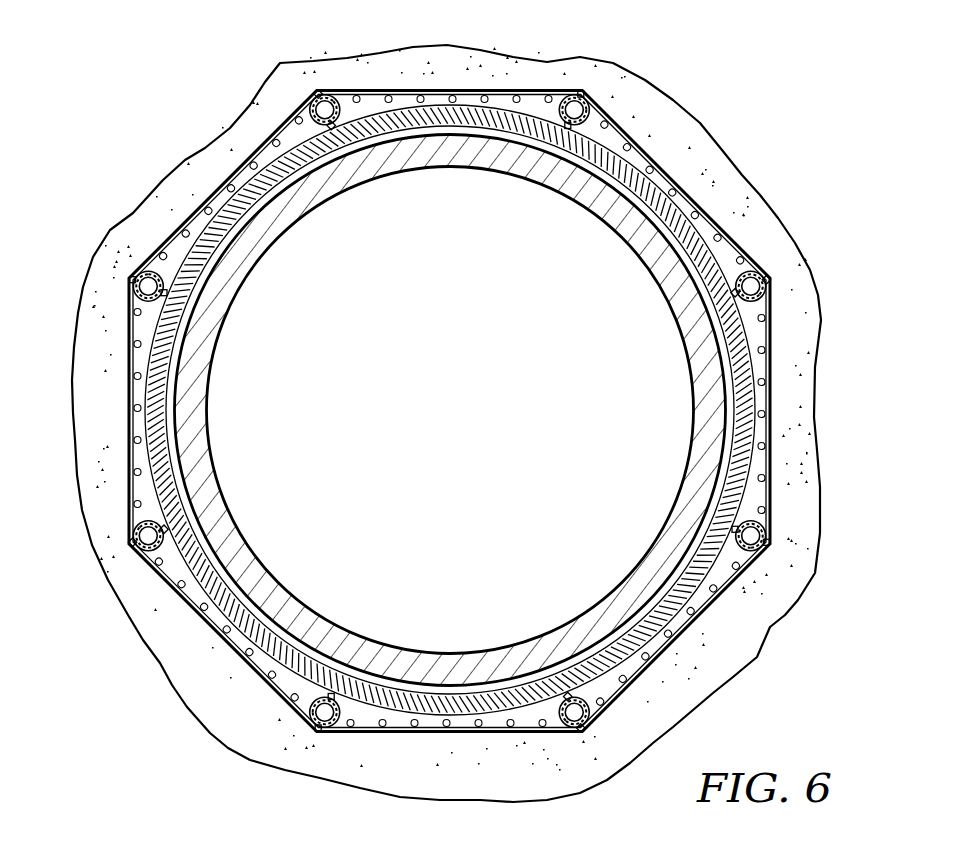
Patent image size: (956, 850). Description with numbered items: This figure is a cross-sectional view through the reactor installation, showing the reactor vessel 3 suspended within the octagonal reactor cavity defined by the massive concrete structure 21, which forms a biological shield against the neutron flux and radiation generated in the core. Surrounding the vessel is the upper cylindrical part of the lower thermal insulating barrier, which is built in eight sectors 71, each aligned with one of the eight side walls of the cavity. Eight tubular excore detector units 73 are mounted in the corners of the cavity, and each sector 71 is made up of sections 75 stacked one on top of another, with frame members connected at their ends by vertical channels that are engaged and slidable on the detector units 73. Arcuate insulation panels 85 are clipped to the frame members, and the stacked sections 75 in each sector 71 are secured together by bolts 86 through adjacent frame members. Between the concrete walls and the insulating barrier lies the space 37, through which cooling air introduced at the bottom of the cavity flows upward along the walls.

The reactor vessel 3 is at (228, 307).
The concrete structure 21 is at (252, 122).
The space 37 is at (670, 643).
The sectors 71 is at (250, 236).
The tubular excore detector units 73 is at (312, 102).
The sections 75 is at (776, 462).
The arcuate insulation panels 85 is at (732, 393).
The bolts 86 is at (692, 222).